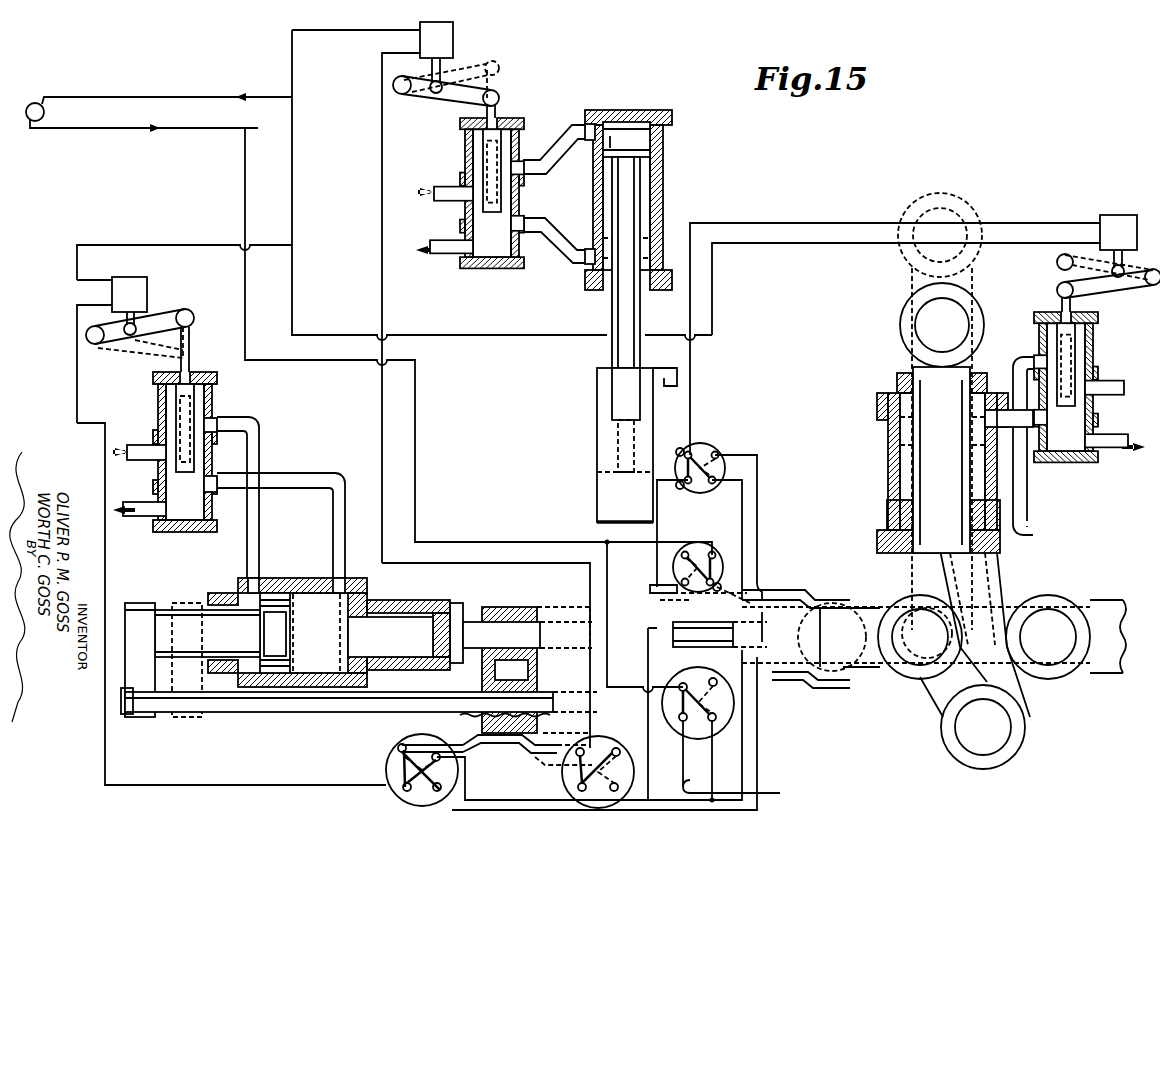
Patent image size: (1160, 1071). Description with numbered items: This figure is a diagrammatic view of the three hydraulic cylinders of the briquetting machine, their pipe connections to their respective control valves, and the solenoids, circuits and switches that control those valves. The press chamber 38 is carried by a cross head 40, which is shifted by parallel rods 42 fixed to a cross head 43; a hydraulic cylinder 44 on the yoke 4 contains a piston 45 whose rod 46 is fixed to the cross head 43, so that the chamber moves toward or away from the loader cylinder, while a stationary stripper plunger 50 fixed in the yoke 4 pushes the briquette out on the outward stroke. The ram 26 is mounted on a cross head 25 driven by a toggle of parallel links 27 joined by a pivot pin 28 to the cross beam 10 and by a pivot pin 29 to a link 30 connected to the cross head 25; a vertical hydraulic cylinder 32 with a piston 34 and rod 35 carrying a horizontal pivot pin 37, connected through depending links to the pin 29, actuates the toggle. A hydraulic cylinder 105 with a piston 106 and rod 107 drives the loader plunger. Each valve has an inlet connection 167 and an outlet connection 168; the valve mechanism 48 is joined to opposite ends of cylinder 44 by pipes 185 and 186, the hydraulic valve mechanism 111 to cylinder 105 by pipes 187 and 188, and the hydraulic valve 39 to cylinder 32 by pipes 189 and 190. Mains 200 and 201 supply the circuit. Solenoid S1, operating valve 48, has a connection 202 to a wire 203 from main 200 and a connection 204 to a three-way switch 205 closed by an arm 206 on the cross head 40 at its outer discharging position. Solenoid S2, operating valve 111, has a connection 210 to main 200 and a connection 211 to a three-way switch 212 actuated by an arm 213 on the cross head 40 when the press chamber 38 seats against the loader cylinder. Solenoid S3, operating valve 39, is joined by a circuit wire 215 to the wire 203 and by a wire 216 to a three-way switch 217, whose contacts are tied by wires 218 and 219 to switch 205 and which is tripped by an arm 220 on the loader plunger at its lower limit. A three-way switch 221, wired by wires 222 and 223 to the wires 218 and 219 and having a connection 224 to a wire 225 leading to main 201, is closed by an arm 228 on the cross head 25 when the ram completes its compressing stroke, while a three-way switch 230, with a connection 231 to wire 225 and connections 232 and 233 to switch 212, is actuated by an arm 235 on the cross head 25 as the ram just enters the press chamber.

The yoke 4 is at (386, 603).
The cross beam 10 is at (1120, 606).
The cross head 25 is at (862, 614).
The ram 26 is at (696, 646).
The parallel links 27 is at (1034, 700).
The pivot pin 28 is at (1055, 624).
The pivot pin 29 is at (1002, 730).
The link 30 is at (942, 690).
The hydraulic cylinder 32 is at (887, 438).
The piston 34 is at (886, 515).
The rod 35 is at (940, 386).
The horizontal pivot pin 37 is at (930, 326).
The press chamber 38 is at (505, 617).
The hydraulic valve 39 is at (1100, 336).
The cross head 40 is at (497, 745).
The parallel rods 42 is at (333, 710).
The cross head 43 is at (136, 610).
The hydraulic cylinder 44 is at (296, 680).
The piston 45 is at (278, 668).
The rod 46 is at (173, 606).
The valve mechanism 48 is at (217, 406).
The stripper plunger 50 is at (528, 622).
The hydraulic cylinder 105 is at (664, 178).
The piston 106 is at (655, 145).
The rod 107 is at (641, 198).
The hydraulic valve mechanism 111 is at (460, 147).
The inlet connection 167 is at (143, 445).
The outlet connection 168 is at (140, 504).
The pipe 185 is at (262, 440).
The pipe 186 is at (310, 488).
The pipe 187 is at (550, 150).
The pipe 188 is at (556, 244).
The pipe 189 is at (1028, 356).
The pipe 190 is at (1022, 457).
The main 200 is at (110, 94).
The main 201 is at (110, 130).
The connection 202 is at (166, 245).
The wire 203 is at (292, 197).
The connection 204 is at (75, 400).
The three-way switch 205 is at (388, 790).
The arm 206 is at (402, 744).
The connection 210 is at (342, 30).
The connection 211 is at (415, 465).
The three-way switch 212 is at (604, 748).
The arm 213 is at (543, 758).
The circuit wire 215 is at (836, 245).
The wire 216 is at (806, 217).
The three-way switch 217 is at (710, 447).
The wire 218 is at (758, 500).
The wire 219 is at (740, 518).
The arm 220 is at (680, 383).
The three-way switch 221 is at (758, 735).
The wire 222 is at (757, 767).
The wire 223 is at (757, 793).
The connection 224 is at (600, 553).
The wire 225 is at (478, 548).
The arm 228 is at (792, 682).
The three-way switch 230 is at (723, 557).
The connection 231 is at (627, 538).
The connection 232 is at (662, 611).
The connection 233 is at (630, 603).
The arm 235 is at (796, 590).
The solenoid S1 is at (148, 290).
The solenoid S2 is at (453, 40).
The solenoid S3 is at (1124, 215).